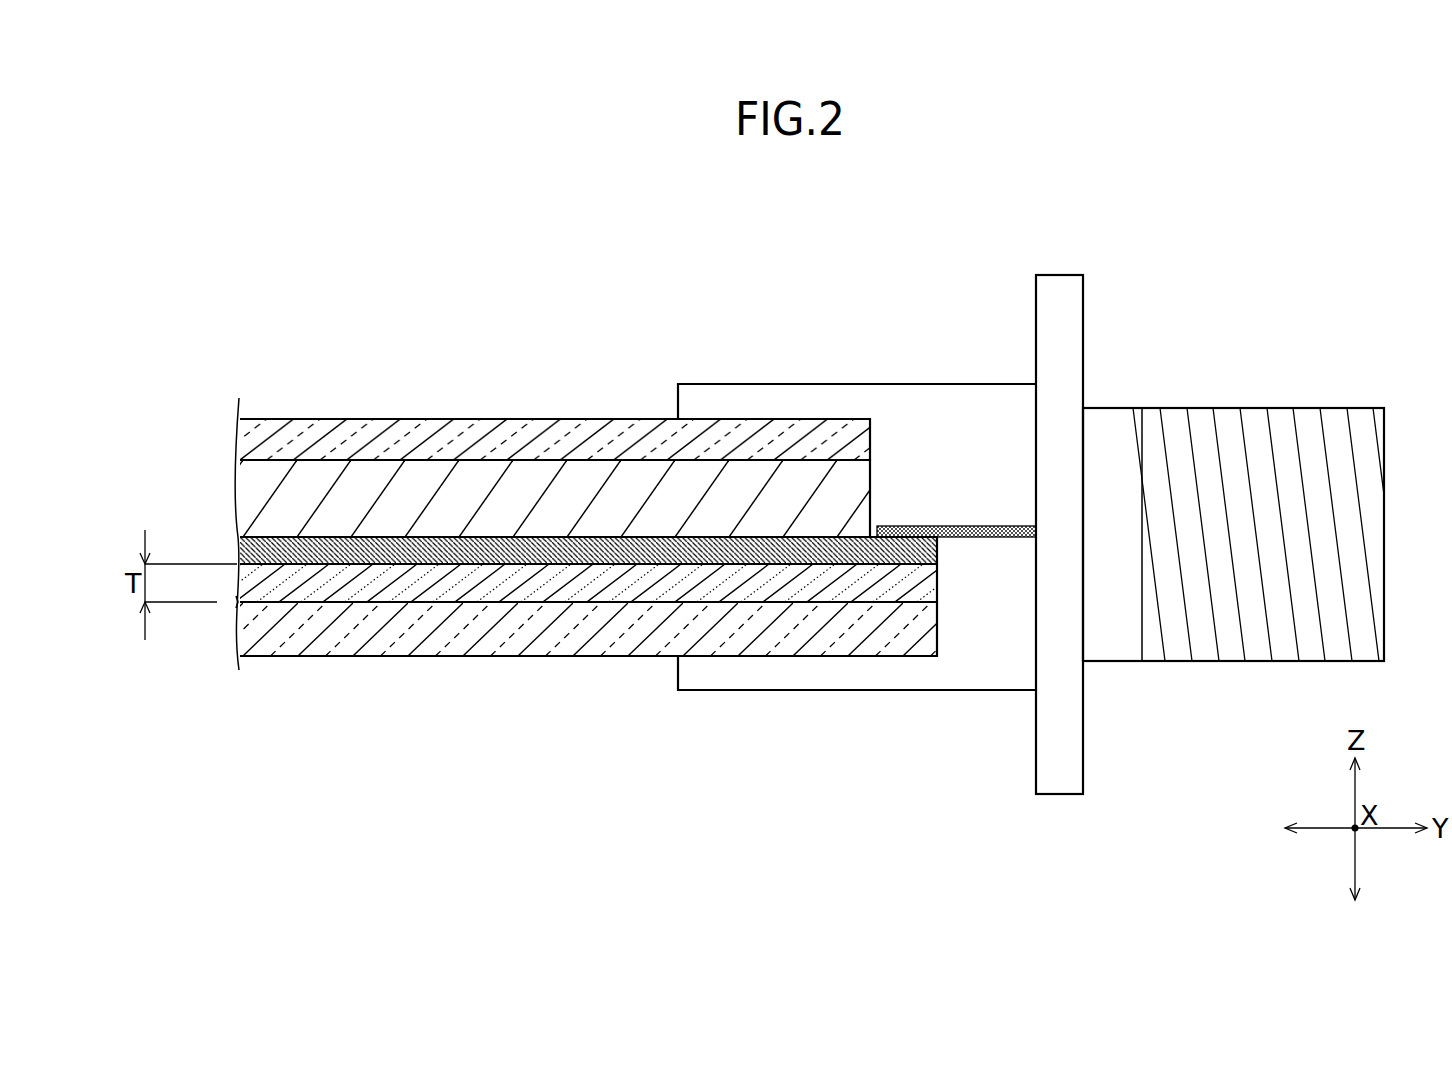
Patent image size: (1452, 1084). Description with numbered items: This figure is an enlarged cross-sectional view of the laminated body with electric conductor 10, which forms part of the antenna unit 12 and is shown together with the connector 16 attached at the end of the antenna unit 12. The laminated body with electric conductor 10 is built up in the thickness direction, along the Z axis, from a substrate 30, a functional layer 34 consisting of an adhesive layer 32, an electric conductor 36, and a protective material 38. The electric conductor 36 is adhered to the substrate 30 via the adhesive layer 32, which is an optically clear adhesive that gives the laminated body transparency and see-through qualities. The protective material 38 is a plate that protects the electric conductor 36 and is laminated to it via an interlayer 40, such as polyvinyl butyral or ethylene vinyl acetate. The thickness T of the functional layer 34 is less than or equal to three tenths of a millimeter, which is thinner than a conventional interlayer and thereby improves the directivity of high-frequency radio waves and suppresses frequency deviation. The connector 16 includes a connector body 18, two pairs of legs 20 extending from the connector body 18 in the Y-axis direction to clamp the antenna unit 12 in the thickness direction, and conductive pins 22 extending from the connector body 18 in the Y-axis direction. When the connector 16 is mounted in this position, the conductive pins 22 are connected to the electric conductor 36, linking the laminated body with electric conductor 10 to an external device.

The laminated body with electric conductor 10 is at (466, 403).
The antenna unit 12 is at (287, 333).
The connector 16 is at (1236, 393).
The connector body 18 is at (1141, 413).
The legs 20 is at (856, 386).
The conductive pins 22 is at (988, 525).
The substrate 30 is at (939, 631).
The adhesive layer 32 is at (939, 590).
The functional layer 34 is at (237, 603).
The electric conductor 36 is at (939, 553).
The protective material 38 is at (870, 438).
The interlayer 40 is at (870, 481).